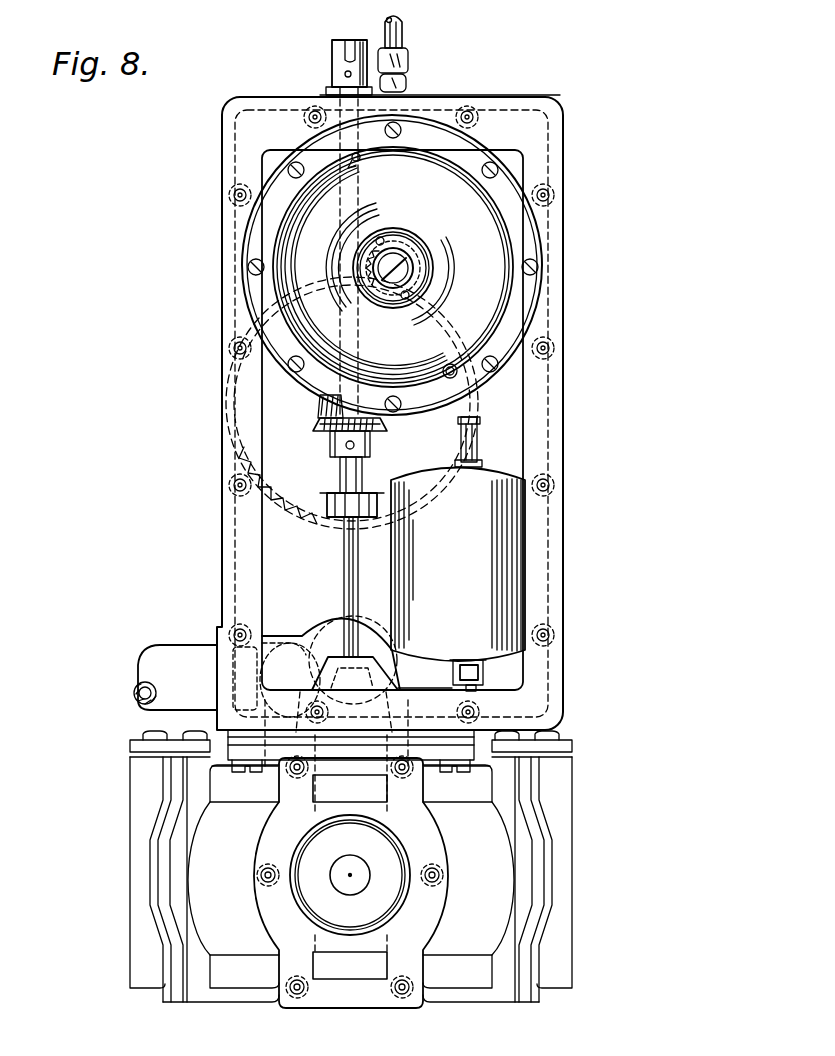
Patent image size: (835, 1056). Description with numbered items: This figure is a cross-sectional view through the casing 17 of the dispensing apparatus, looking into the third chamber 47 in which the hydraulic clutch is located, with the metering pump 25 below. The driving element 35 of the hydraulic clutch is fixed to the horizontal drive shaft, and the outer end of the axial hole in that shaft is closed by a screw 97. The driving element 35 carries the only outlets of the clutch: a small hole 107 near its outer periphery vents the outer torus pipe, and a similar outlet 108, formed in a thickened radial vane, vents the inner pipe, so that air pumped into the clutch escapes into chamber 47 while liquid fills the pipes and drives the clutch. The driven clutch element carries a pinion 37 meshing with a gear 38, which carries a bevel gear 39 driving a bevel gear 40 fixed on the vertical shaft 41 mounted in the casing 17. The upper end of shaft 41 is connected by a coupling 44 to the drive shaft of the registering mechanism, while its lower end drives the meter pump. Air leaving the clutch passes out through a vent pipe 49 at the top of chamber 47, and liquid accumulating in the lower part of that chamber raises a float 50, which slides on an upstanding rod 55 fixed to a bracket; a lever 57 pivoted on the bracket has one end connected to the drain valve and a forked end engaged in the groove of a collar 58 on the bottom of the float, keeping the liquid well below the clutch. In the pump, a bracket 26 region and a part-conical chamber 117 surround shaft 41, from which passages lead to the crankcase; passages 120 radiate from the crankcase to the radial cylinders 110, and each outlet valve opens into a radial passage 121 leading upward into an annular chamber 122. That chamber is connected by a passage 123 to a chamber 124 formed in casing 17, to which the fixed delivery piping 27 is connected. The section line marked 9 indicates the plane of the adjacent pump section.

The section line 9- 9 is at (118, 875).
The casing 17 is at (221, 548).
The metering pump 25 is at (232, 1005).
The bearing bracket 26 is at (336, 625).
The fixed piping 27 is at (138, 686).
The driving element of hydraulic clutch 35 is at (392, 265).
The pinion 37 is at (340, 230).
The gear 38 is at (309, 509).
The bevel gear 39 is at (319, 406).
The bevel gear 40 is at (320, 429).
The vertical shaft 41 is at (344, 548).
The coupling 44 is at (334, 49).
The third chamber 47 is at (516, 393).
The vent pipe 49 is at (403, 33).
The float 50 is at (458, 565).
The upstanding rod 55 is at (479, 430).
The lever 57 is at (468, 647).
The collar 58 is at (487, 677).
The screw 97 is at (407, 276).
The small hole 107 is at (358, 166).
The outlet hole 108 is at (428, 409).
The cylinder 110 is at (350, 875).
The part-conical chamber 117 is at (396, 688).
The passage 120 is at (350, 967).
The radial passage 121 is at (350, 788).
The annular chamber 122 is at (276, 758).
The passage 123 is at (314, 684).
The chamber 124 is at (308, 633).